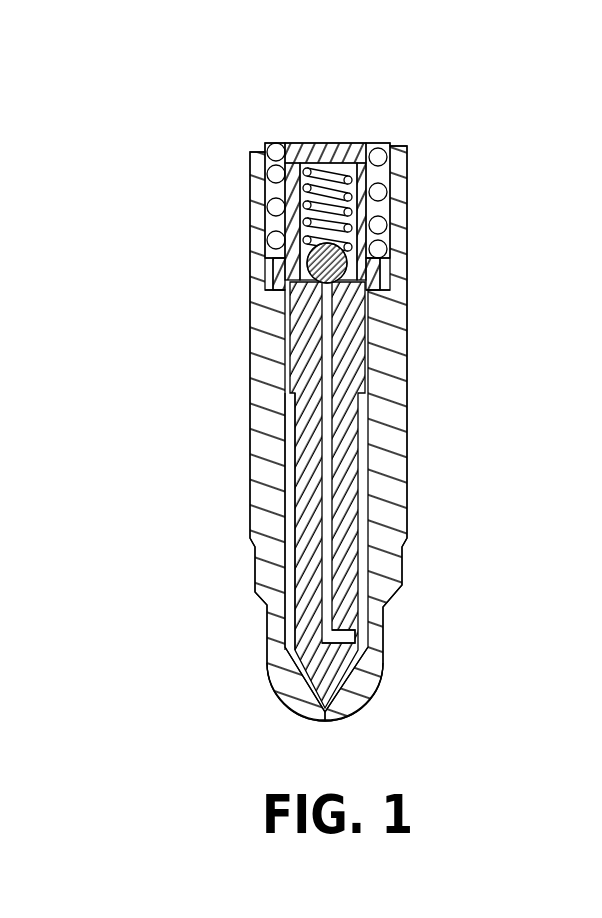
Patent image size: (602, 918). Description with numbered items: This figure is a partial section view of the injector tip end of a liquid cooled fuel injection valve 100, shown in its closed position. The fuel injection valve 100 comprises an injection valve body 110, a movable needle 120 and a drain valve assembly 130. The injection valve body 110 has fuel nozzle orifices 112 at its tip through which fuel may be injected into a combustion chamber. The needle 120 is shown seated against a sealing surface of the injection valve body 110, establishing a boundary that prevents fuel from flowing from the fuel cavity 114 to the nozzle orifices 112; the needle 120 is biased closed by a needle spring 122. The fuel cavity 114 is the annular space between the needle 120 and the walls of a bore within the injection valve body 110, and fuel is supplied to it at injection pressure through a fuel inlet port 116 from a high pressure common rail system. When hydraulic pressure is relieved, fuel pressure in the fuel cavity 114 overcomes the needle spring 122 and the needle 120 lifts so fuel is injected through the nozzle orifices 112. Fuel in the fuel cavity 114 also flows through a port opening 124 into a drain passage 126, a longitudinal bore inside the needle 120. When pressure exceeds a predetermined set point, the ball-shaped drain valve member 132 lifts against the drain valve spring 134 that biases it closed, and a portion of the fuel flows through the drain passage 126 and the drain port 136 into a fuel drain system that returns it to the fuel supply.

The fuel injection valve 100 is at (212, 112).
The injection valve body 110 is at (272, 358).
The fuel nozzle orifices 112 is at (293, 683).
The fuel cavity 114 is at (292, 555).
The fuel inlet port 116 is at (388, 400).
The movable needle 120 is at (308, 462).
The needle spring 122 is at (275, 238).
The port opening 124 is at (353, 637).
The drain passage 126 is at (325, 512).
The drain valve assembly 130 is at (420, 131).
The drain valve member 132 is at (348, 258).
The drain valve spring 134 is at (358, 177).
The drain port 136 is at (363, 222).